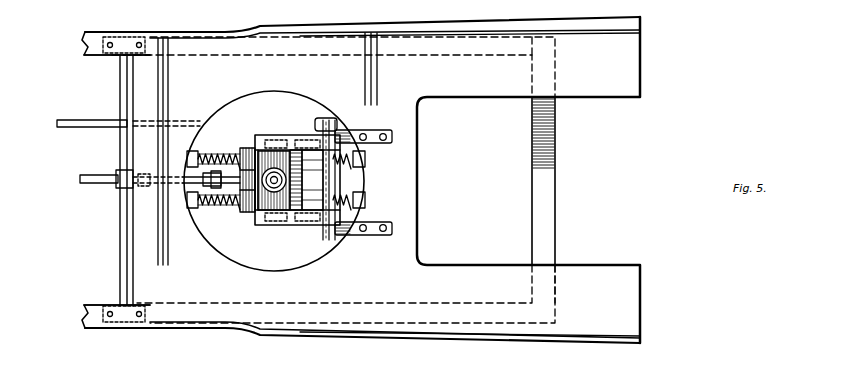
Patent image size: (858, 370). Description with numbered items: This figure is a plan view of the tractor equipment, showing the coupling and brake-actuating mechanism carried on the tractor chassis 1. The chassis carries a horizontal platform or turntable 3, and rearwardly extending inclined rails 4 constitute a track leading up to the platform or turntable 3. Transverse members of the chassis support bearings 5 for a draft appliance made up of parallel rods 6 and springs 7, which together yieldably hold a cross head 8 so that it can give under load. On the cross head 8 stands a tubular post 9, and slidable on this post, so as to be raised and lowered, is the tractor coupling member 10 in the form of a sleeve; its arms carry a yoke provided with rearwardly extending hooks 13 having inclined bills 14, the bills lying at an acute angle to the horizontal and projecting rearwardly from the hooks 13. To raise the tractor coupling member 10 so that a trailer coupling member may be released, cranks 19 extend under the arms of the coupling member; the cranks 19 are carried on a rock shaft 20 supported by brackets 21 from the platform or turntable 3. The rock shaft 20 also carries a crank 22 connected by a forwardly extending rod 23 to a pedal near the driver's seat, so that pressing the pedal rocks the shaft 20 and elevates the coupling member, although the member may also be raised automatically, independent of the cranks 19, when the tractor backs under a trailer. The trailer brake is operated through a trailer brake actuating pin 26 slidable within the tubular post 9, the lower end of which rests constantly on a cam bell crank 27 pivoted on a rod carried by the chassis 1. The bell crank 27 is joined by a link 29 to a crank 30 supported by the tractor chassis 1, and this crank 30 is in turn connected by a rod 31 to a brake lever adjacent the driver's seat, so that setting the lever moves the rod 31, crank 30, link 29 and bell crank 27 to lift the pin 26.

The tractor chassis 1 is at (104, 55).
The platform or turntable 3 is at (181, 82).
The inclined rails 4 is at (362, 180).
The bearings 5 is at (187, 157).
The parallel rods 6 is at (207, 154).
The springs 7 is at (214, 154).
The cross head 8 is at (238, 212).
The tubular post 9 is at (250, 212).
The tractor coupling member 10 is at (258, 212).
The hooks 13 is at (274, 135).
The inclined bills 14 is at (318, 134).
The cranks 19 is at (303, 135).
The rock shaft 20 is at (337, 182).
The brackets 21 is at (377, 130).
The crank 22 is at (326, 118).
The rod 23 is at (240, 135).
The trailer brake actuating pin 26 is at (256, 190).
The cam bell crank 27 is at (242, 178).
The link 29 is at (185, 184).
The crank 30 is at (118, 188).
The rod 31 is at (92, 183).